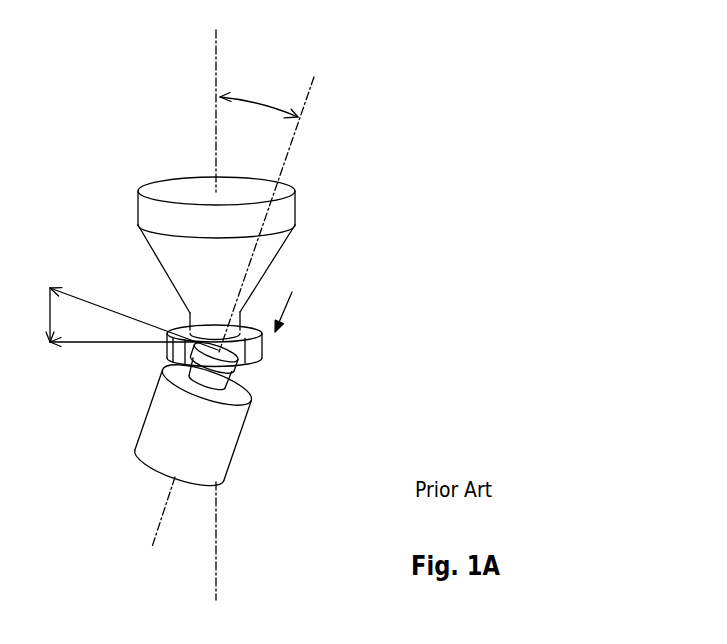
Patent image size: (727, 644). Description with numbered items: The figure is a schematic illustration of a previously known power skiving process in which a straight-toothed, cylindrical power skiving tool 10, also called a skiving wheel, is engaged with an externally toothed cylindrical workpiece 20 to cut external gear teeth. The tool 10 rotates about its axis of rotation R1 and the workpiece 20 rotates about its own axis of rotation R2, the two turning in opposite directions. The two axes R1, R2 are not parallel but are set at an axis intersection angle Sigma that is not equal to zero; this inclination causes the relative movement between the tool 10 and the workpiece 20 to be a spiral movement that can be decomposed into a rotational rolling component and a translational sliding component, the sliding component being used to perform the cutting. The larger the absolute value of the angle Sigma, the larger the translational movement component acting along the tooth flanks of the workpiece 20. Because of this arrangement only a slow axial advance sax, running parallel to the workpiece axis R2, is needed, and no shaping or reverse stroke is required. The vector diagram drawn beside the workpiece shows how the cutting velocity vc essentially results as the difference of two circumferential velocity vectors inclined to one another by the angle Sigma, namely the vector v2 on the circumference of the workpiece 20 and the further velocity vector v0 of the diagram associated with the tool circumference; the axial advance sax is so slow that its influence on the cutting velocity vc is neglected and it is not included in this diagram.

The power skiving tool 10 is at (263, 343).
The workpiece 20 is at (167, 352).
The axis of rotation of the power skiving tool R1 is at (218, 303).
The axis of rotation of the workpiece R2 is at (246, 298).
The axis intersection angle Sigma is at (259, 112).
The cutting velocity vc is at (38, 315).
The workpiece circumferential velocity v0 is at (125, 353).
The velocity vector on the circumference of the workpiece v2 is at (134, 319).
The axial advance sax is at (295, 312).